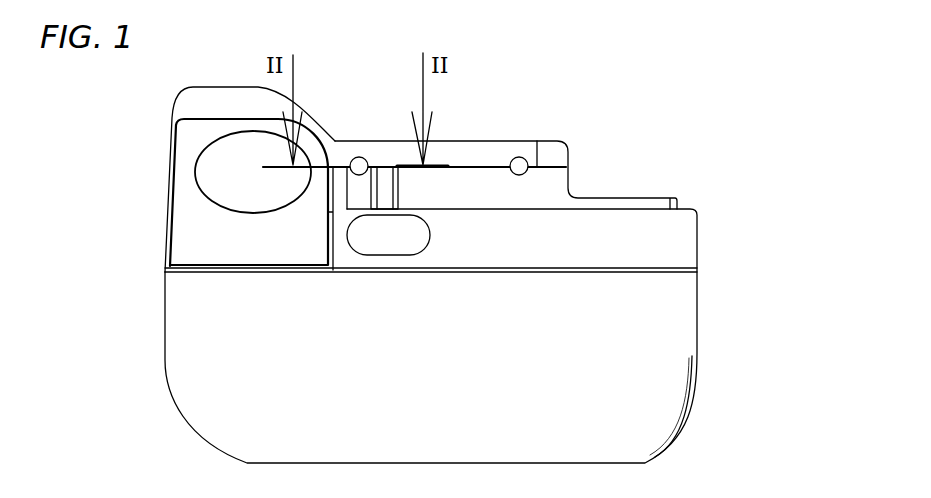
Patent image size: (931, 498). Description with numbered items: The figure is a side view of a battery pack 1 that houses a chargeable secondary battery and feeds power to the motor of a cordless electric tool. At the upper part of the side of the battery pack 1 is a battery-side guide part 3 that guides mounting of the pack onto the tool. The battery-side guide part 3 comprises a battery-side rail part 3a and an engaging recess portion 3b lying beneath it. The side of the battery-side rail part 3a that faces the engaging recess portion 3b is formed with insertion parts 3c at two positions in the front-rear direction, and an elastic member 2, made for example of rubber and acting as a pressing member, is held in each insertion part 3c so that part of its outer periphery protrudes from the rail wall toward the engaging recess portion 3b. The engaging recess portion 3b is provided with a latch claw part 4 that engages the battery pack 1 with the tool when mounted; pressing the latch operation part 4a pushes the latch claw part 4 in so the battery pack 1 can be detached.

The battery pack 1 is at (699, 414).
The elastic member 2 is at (481, 121).
The battery-side guide part 3 is at (470, 133).
The battery-side rail part 3a is at (467, 147).
The engaging recess portion 3b is at (477, 187).
The insertion part 3c is at (359, 157).
The latch claw part 4 is at (387, 178).
The latch operation part 4a is at (218, 172).